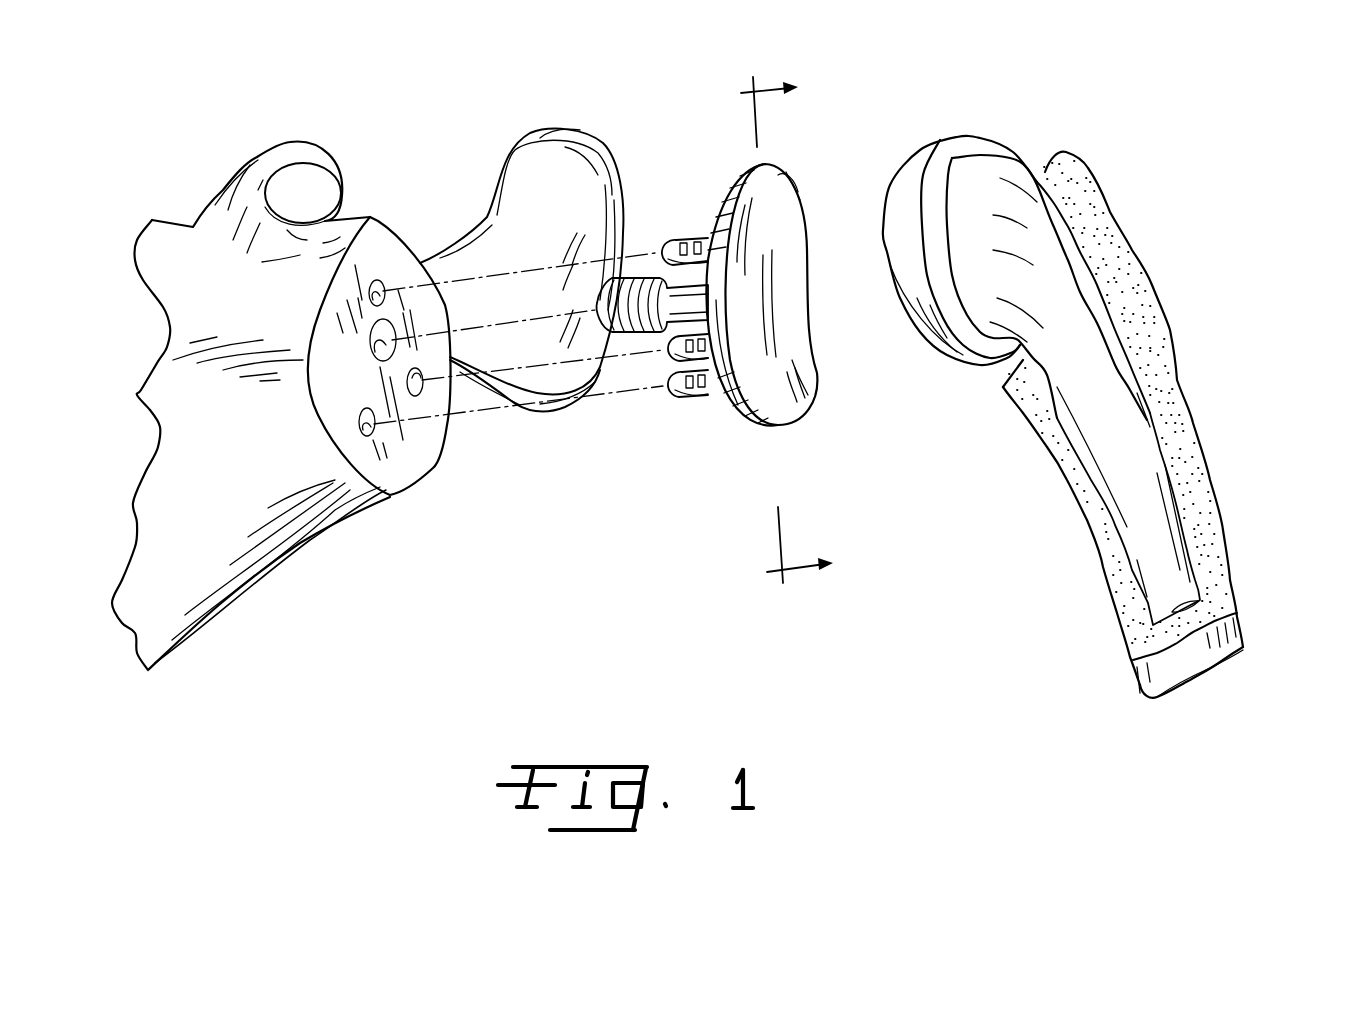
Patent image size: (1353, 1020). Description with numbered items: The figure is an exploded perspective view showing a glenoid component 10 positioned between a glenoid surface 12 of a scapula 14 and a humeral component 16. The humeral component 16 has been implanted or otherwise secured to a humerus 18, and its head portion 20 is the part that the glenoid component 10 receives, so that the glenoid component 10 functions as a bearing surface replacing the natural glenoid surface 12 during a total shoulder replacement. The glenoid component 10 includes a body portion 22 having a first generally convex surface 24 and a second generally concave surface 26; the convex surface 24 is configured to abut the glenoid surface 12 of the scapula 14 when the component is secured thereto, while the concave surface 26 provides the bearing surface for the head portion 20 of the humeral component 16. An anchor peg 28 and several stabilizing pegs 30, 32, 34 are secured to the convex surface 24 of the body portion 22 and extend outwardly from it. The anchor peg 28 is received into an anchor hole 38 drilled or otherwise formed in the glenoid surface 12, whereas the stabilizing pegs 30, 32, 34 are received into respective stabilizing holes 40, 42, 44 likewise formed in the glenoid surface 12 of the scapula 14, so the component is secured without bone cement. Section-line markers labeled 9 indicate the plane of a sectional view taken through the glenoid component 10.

The section line for FIG. 9 is at (799, 325).
The glenoid component 10 is at (743, 272).
The glenoid surface 12 is at (395, 258).
The scapula 14 is at (237, 317).
The humeral component 16 is at (1013, 170).
The humerus 18 is at (1170, 395).
The head portion 20 is at (900, 232).
The body portion 22 is at (779, 197).
The convex surface 24 is at (733, 405).
The concave surface 26 is at (797, 387).
The anchor peg 28 is at (680, 304).
The stabilizing peg 30 is at (670, 240).
The stabilizing peg 32 is at (715, 337).
The stabilizing peg 34 is at (676, 398).
The anchor hole 38 is at (377, 350).
The stabilizing hole 40 is at (372, 294).
The stabilizing hole 42 is at (420, 380).
The stabilizing hole 44 is at (366, 428).